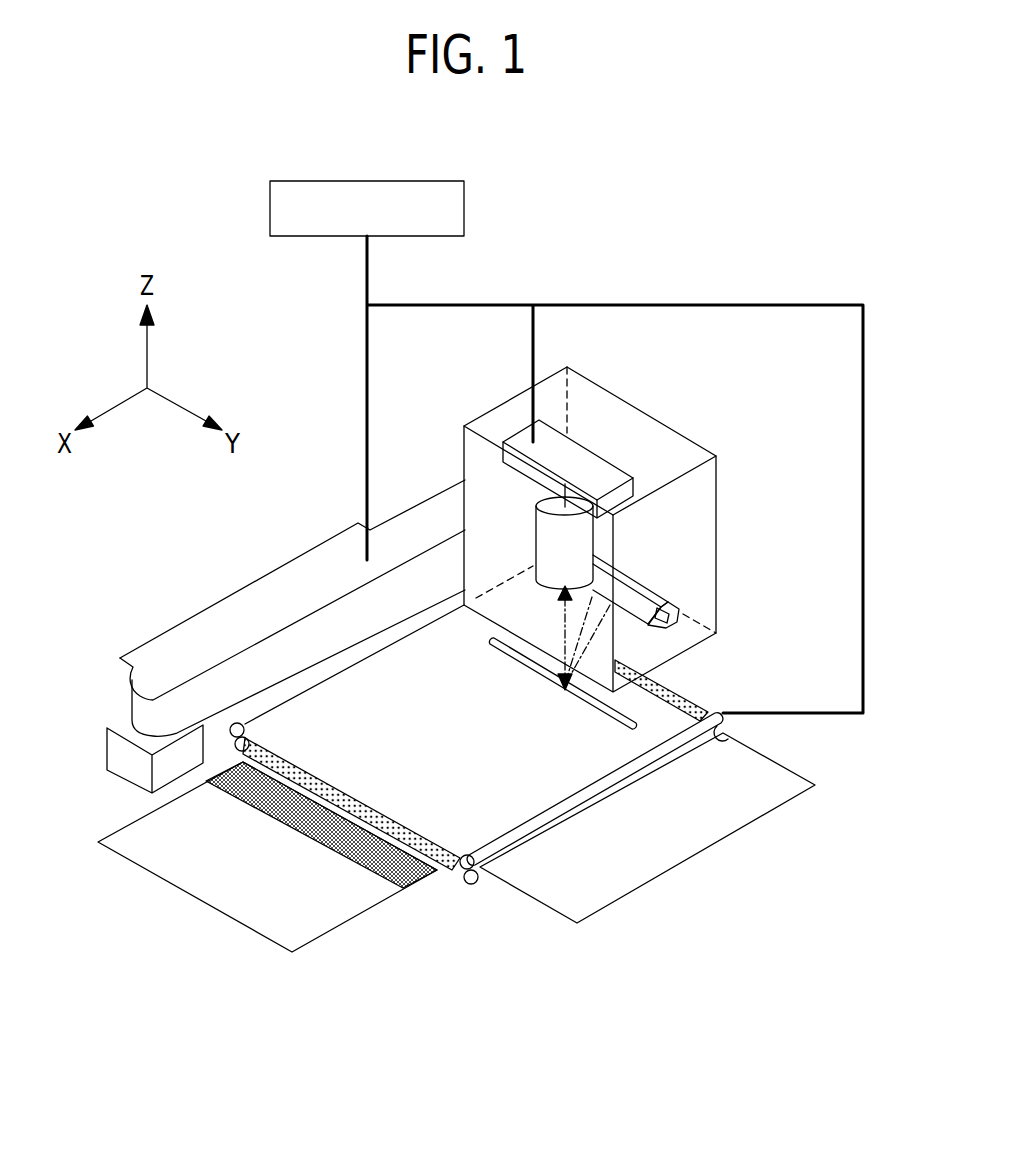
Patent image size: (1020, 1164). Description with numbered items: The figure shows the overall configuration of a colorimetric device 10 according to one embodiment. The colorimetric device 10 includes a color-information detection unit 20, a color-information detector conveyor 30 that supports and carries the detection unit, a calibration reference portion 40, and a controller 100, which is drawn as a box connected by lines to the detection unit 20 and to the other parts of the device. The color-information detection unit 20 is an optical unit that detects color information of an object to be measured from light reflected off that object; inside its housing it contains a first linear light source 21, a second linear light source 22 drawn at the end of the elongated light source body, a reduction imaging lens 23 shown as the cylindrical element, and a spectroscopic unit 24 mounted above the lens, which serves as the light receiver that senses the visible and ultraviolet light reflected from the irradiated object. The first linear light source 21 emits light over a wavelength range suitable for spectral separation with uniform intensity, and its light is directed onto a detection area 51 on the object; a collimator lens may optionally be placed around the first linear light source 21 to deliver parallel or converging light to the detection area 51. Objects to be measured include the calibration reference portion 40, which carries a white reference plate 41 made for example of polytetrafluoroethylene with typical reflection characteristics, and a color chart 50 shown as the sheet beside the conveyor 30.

The colorimetric device 10 is at (765, 172).
The controller 100 is at (410, 181).
The color-information detection unit 20 is at (585, 374).
The spectroscopic unit 24 is at (610, 456).
The reduction imaging lens 23 is at (598, 533).
The first linear light source 21 is at (673, 600).
The second linear light source 22 is at (683, 624).
The color-information detector conveyor 30 is at (140, 682).
The calibration reference portion 40 is at (165, 882).
The white reference plate 41 is at (277, 925).
The color chart 50 is at (757, 748).
The detection area 51 is at (623, 712).